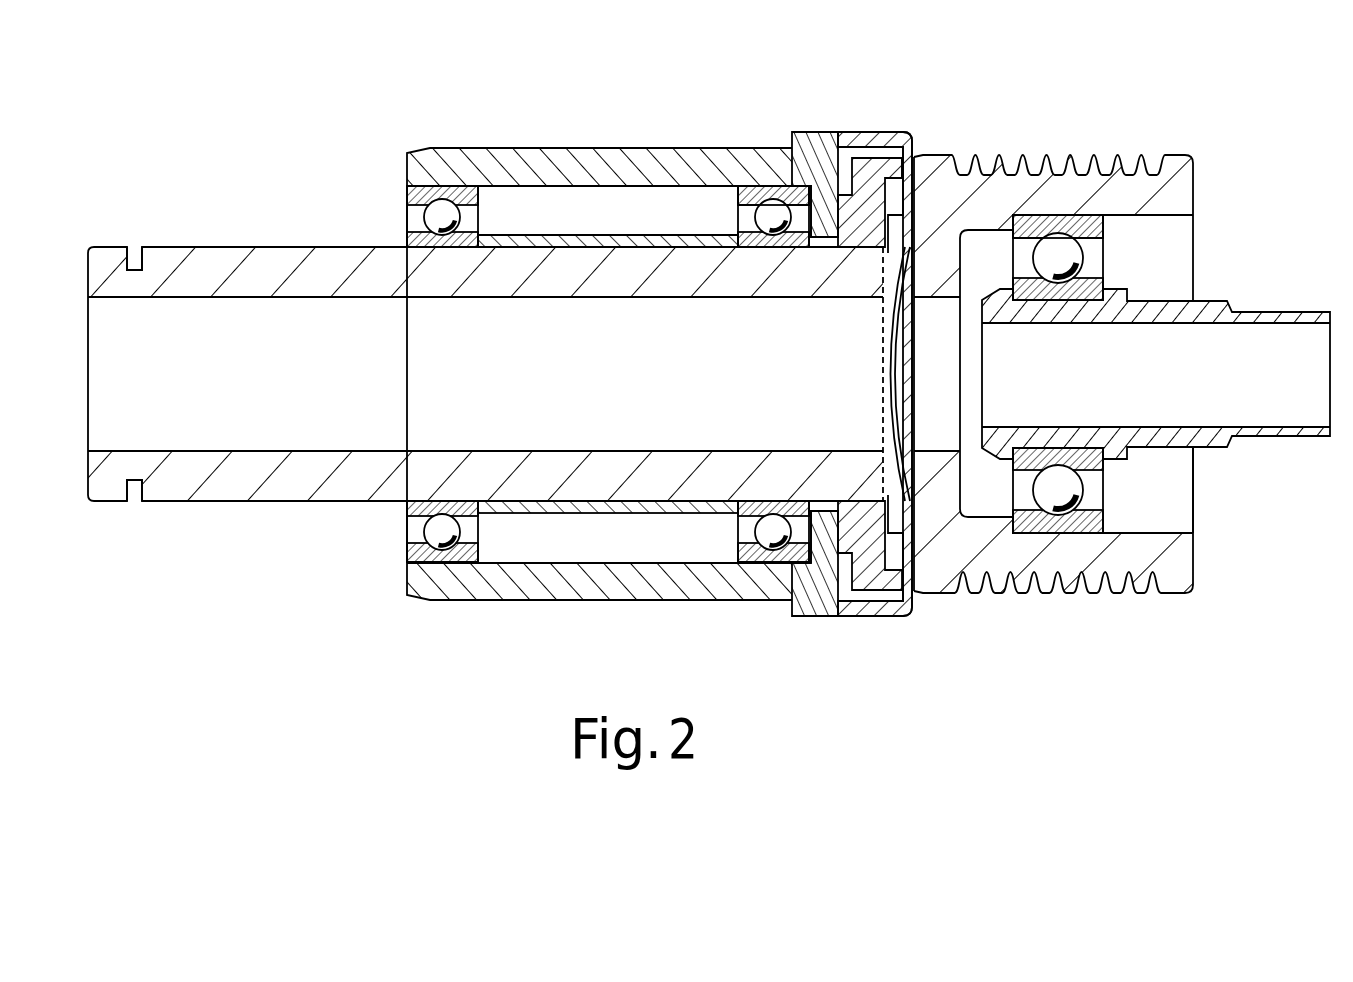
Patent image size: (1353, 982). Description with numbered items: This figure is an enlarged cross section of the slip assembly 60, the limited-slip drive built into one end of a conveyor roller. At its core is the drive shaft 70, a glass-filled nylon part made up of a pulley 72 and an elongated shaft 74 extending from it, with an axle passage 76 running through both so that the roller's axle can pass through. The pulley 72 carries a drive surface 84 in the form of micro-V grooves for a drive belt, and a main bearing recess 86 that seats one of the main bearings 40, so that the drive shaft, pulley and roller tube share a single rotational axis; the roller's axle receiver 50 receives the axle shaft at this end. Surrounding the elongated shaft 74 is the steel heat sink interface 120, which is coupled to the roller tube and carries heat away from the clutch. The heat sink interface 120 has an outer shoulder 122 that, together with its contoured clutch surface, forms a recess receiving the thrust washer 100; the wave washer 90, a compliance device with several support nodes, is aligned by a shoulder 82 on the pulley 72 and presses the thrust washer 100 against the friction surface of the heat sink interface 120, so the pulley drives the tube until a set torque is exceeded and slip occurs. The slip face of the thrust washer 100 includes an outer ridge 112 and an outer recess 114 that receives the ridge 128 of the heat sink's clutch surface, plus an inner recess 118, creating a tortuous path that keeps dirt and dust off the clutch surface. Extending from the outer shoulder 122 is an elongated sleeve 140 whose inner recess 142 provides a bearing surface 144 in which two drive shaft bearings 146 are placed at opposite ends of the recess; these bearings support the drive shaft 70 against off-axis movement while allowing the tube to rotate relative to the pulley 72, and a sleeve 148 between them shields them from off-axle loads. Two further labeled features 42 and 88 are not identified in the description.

The main bearing 40 is at (1090, 232).
The bearing outer race 42 is at (1037, 222).
The axle receiver 50 is at (1272, 312).
The slip assembly 60 is at (1019, 728).
The drive shaft 70 is at (1173, 197).
The pulley 72 is at (1020, 547).
The elongated shaft 74 is at (252, 478).
The axle passage 76 is at (300, 310).
The shoulder 82 is at (875, 515).
The drive surface 84 is at (1067, 583).
The main bearing recess 86 is at (1130, 498).
The groove 88 is at (130, 243).
The wave washer 90 is at (888, 317).
The thrust washer 100 is at (869, 147).
The outer ridge 112 is at (877, 168).
The outer recess 114 is at (858, 168).
The inner recess 118 is at (855, 197).
The heat sink interface 120 is at (590, 162).
The outer shoulder 122 is at (897, 132).
The ridge 128 is at (852, 557).
The elongated sleeve 140 is at (592, 587).
The inner recess 142 is at (517, 202).
The bearing surface 144 is at (762, 183).
The drive shaft bearing 146 is at (407, 186).
The sleeve 148 is at (635, 240).